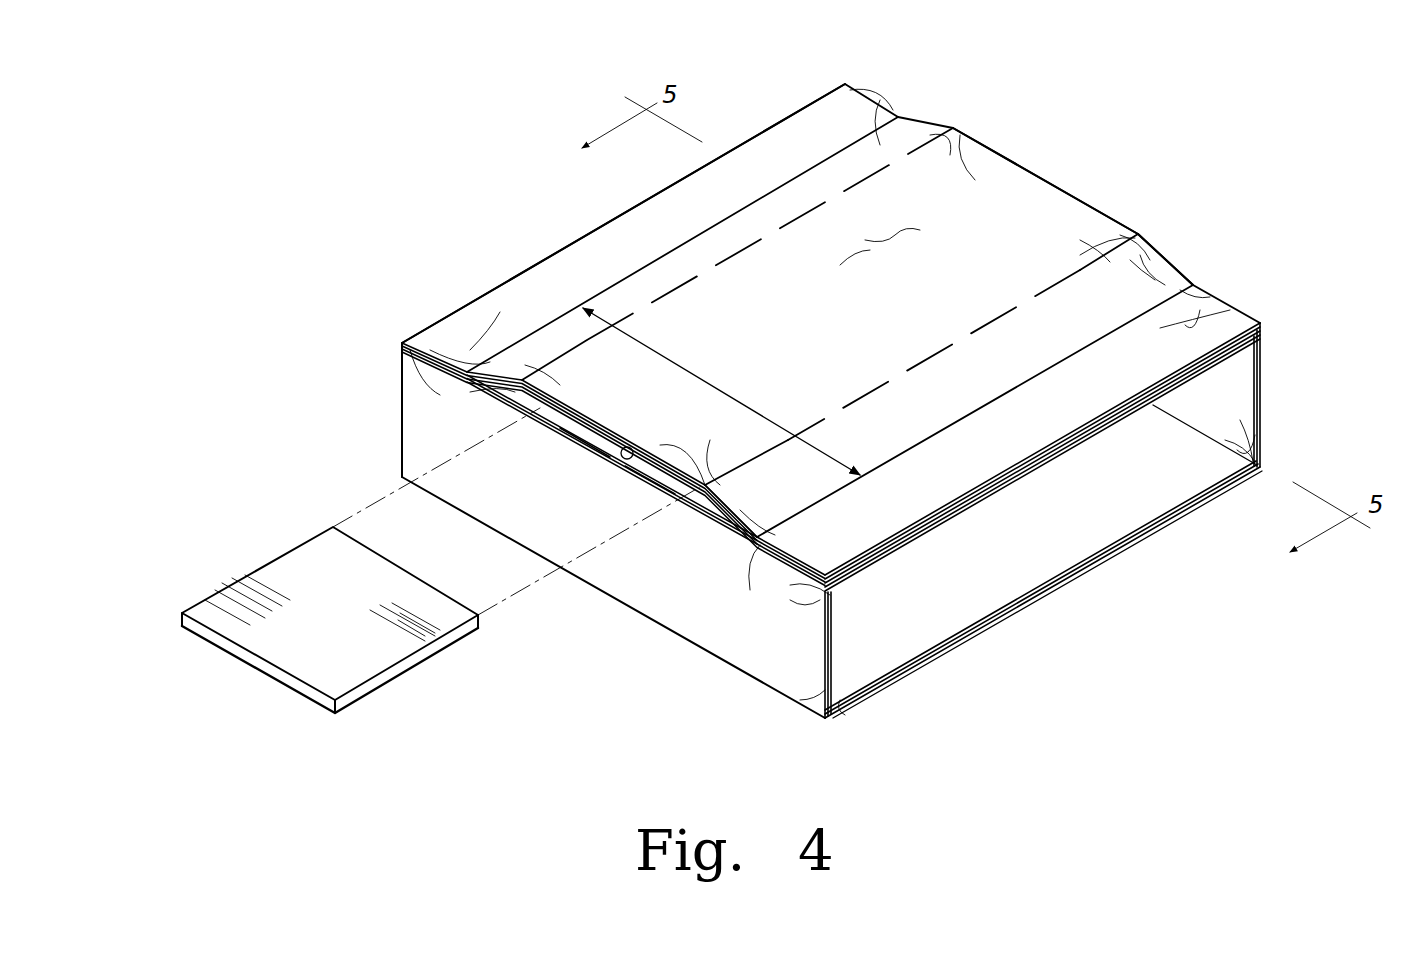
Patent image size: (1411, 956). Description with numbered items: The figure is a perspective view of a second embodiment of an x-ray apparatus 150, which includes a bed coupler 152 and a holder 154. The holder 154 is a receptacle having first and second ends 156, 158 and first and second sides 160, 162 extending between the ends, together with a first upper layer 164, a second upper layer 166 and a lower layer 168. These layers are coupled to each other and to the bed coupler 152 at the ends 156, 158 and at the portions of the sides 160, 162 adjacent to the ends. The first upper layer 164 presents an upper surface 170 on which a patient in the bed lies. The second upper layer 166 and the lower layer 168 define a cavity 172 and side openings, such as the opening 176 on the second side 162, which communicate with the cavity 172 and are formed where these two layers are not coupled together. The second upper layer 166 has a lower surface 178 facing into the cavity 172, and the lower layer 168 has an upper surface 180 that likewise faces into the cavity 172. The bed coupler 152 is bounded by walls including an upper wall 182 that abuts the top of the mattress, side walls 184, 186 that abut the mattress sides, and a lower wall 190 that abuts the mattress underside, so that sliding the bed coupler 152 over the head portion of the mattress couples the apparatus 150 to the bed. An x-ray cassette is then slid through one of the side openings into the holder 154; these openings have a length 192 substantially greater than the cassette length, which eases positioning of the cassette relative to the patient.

The x-ray apparatus 150 is at (532, 208).
The bed coupler 152 is at (1318, 402).
The holder 154 is at (1058, 118).
The first end 156 is at (813, 113).
The second end 158 is at (1237, 310).
The first side 160 is at (490, 395).
The second side 162 is at (1110, 212).
The first upper layer 164 is at (997, 157).
The second upper layer 166 is at (625, 447).
The lower layer 168 is at (693, 503).
The upper surface 170 is at (1063, 198).
The cavity 172 is at (583, 447).
The opening 176 is at (1142, 212).
The lower surface 178 is at (647, 487).
The upper surface 180 is at (553, 432).
The upper wall 182 is at (1263, 358).
The side wall 184 is at (775, 678).
The side wall 186 is at (1263, 427).
The lower wall 190 is at (1028, 553).
The length 192 is at (760, 410).